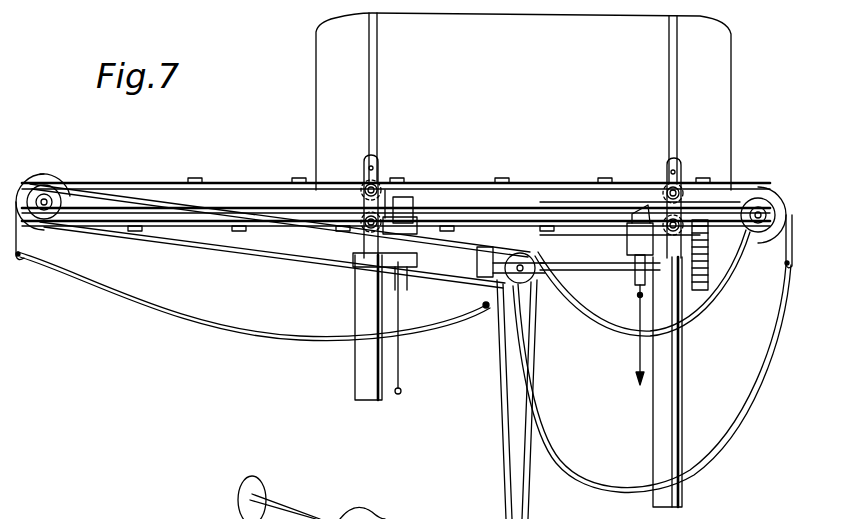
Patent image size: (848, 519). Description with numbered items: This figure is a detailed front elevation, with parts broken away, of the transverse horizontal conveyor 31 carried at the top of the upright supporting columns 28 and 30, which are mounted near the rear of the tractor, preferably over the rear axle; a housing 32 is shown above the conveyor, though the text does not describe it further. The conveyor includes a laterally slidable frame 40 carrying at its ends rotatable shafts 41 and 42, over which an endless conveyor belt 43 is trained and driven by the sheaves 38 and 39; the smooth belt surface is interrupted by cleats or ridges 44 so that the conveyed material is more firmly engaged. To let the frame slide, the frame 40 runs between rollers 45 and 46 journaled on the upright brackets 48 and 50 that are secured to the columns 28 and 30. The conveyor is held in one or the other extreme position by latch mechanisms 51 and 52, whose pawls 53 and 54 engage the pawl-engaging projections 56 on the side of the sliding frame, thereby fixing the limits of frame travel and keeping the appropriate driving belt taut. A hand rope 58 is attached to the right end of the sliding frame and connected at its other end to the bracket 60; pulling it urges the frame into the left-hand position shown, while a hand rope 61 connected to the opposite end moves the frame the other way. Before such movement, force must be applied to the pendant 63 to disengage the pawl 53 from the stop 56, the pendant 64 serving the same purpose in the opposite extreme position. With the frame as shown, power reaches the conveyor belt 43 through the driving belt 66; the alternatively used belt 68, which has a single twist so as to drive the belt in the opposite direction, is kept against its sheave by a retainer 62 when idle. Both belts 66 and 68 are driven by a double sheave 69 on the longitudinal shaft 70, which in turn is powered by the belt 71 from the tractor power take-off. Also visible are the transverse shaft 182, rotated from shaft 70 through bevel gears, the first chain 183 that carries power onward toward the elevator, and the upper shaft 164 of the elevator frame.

The upright supporting column 28 is at (683, 492).
The upright supporting column 30 is at (355, 373).
The transverse horizontal conveyor 31 is at (304, 120).
The housing 32 is at (320, 43).
The sheave 38 is at (757, 198).
The sheave 39 is at (54, 185).
The laterally slidable frame 40 is at (285, 212).
The rotatable shaft 41 is at (758, 218).
The rotatable shaft 42 is at (44, 206).
The endless conveyor belt 43 is at (246, 183).
The cleats or ridges 44 is at (197, 183).
The roller 45 is at (360, 230).
The roller 46 is at (364, 190).
The upright bracket 48 is at (668, 165).
The upright bracket 50 is at (378, 160).
The latch mechanism 51 is at (410, 262).
The latch mechanism 52 is at (634, 270).
The pawl 53 is at (408, 200).
The pawl 54 is at (640, 212).
The pawl-engaging projection 56 is at (386, 200).
The hand rope 58 is at (750, 390).
The bracket 60 is at (485, 312).
The hand rope 61 is at (225, 325).
The retainer 62 is at (33, 178).
The pendant 63 is at (402, 370).
The pendant 64 is at (637, 367).
The driving belt 66 is at (290, 255).
The driving belt 68 is at (600, 490).
The double sheave 69 is at (540, 285).
The longitudinal shaft 70 is at (520, 284).
The belt 71 is at (502, 464).
The upper shaft 164 is at (303, 510).
The transverse shaft 182 is at (608, 264).
The first chain 183 is at (710, 292).